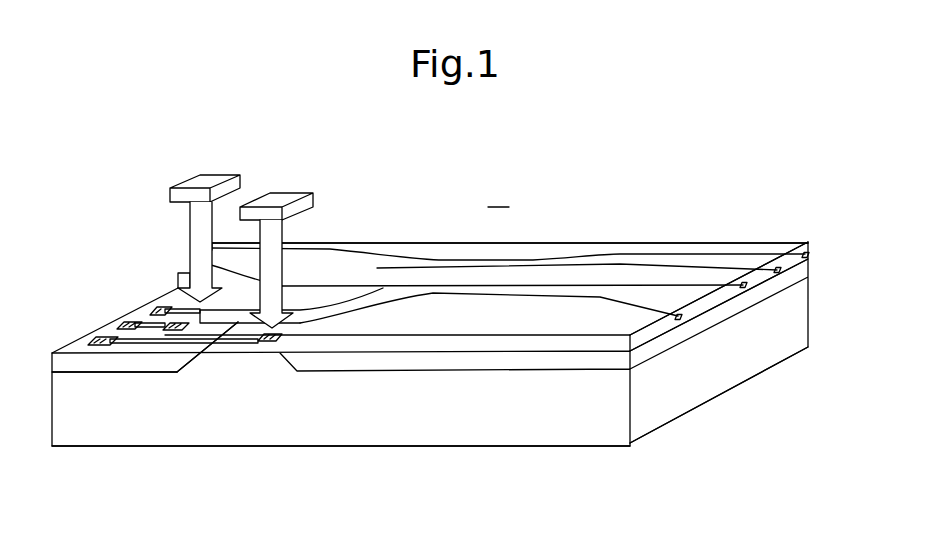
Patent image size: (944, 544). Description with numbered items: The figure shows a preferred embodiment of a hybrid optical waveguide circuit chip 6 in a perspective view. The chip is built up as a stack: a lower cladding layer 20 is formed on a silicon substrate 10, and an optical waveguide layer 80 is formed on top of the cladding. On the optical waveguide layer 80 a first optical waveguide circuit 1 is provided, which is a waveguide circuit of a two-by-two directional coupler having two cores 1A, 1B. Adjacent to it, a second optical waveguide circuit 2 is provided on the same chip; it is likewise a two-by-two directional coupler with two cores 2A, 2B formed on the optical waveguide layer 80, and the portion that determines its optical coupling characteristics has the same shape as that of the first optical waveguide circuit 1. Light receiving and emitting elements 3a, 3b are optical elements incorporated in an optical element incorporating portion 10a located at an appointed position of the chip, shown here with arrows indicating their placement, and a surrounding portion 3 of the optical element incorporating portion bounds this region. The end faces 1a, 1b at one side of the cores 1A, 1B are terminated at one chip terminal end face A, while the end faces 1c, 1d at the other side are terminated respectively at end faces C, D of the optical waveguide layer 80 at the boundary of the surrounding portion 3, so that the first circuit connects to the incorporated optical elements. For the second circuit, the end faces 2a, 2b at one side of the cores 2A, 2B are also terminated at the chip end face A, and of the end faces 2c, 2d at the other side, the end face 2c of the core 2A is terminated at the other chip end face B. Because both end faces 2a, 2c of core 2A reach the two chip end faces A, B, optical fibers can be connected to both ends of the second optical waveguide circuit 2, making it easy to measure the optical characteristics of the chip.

The first optical waveguide circuit 1 is at (517, 497).
The core 1A is at (611, 287).
The core 1B is at (550, 294).
The end face 1a is at (745, 288).
The end face 1b is at (680, 318).
The end face 1c is at (203, 263).
The end face 1d is at (310, 298).
The second optical waveguide circuit 2 is at (717, 175).
The core 2A is at (704, 249).
The core 2B is at (650, 262).
The end face 2a is at (812, 256).
The end face 2b is at (812, 281).
The end face 2c is at (233, 249).
The end face 2d is at (377, 268).
The surrounding portion of the optical element incorporating portion 3 is at (126, 347).
The light receiving and emitting element 3a is at (214, 178).
The light receiving and emitting element 3b is at (286, 196).
The hybrid optical waveguide circuit chip 6 is at (498, 207).
The silicon substrate 10 is at (650, 405).
The optical element incorporating portion 10a is at (268, 346).
The lower cladding layer 20 is at (812, 273).
The optical waveguide layer 80 is at (812, 246).
The chip end face A is at (705, 400).
The chip end face B is at (50, 393).
The end face of the optical waveguide layer C is at (170, 323).
The end face of the optical waveguide layer D is at (252, 352).